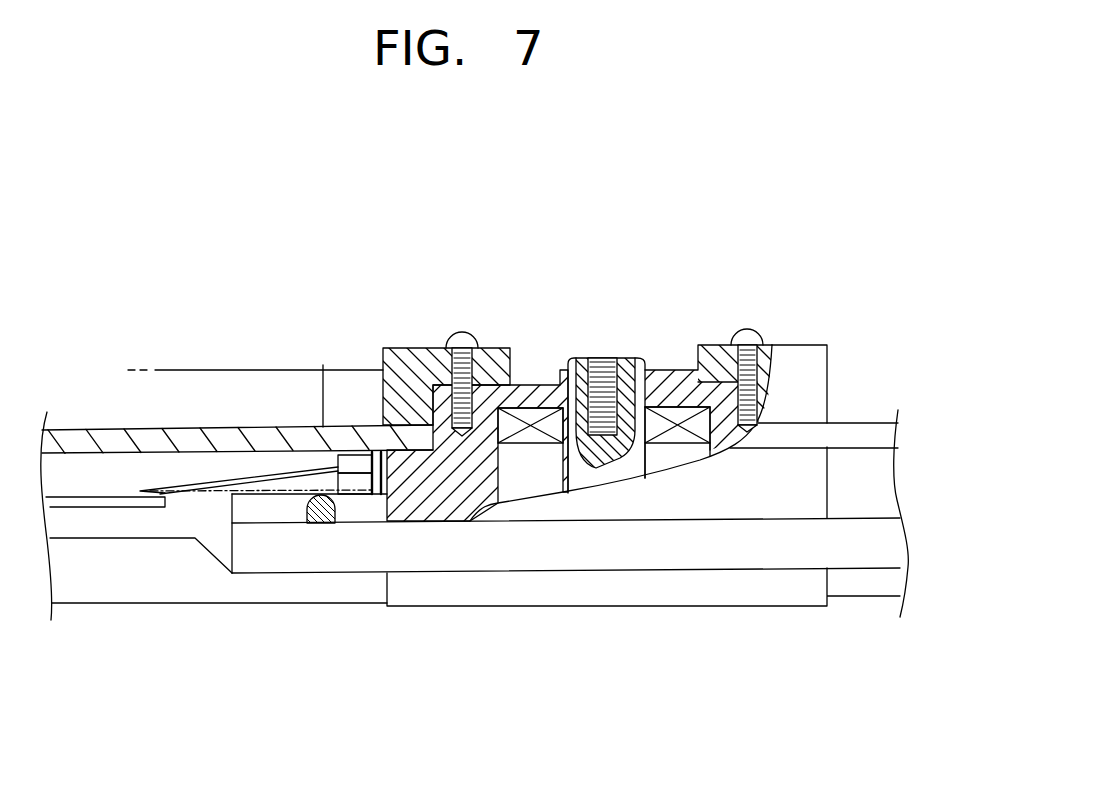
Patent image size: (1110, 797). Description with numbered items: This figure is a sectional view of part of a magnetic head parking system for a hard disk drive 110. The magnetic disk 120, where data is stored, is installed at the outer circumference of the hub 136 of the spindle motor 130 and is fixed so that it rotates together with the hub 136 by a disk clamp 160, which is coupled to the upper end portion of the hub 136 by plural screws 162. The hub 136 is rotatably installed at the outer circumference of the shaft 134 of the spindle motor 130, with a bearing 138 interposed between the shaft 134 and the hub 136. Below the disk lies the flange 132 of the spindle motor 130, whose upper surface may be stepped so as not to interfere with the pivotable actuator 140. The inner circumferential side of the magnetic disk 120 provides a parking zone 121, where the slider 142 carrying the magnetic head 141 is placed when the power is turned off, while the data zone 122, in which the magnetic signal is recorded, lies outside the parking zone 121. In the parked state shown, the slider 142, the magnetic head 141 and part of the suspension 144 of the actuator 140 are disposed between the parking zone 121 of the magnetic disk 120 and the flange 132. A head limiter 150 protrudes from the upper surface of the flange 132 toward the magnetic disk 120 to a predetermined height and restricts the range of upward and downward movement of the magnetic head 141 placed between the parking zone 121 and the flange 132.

The housing 110 is at (157, 590).
The magnetic disk 120 is at (84, 437).
The parking zone 121 is at (353, 368).
The data zone 122 is at (188, 370).
The spindle motor 130 is at (556, 635).
The flange 132 is at (618, 553).
The shaft 134 is at (633, 360).
The hub 136 is at (438, 520).
The bearing 138 is at (535, 415).
The actuator 140 is at (146, 522).
The magnetic head 141 is at (282, 440).
The slider 142 is at (348, 462).
The suspension 144 is at (210, 492).
The head limiter 150 is at (318, 526).
The disk clamp 160 is at (418, 348).
The screws 162 is at (467, 334).